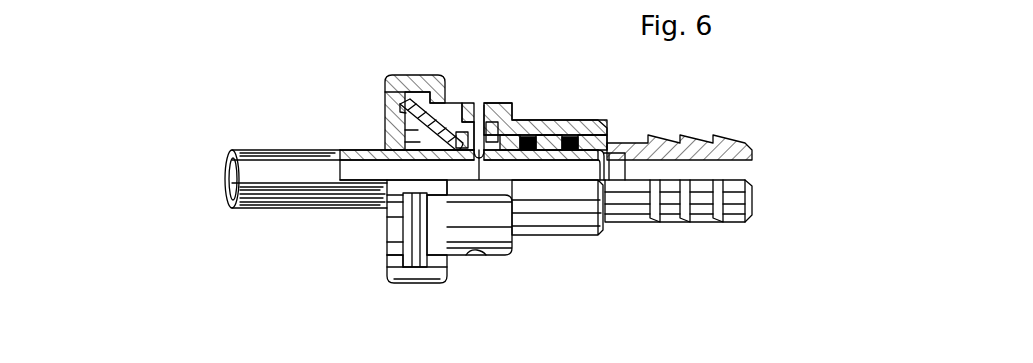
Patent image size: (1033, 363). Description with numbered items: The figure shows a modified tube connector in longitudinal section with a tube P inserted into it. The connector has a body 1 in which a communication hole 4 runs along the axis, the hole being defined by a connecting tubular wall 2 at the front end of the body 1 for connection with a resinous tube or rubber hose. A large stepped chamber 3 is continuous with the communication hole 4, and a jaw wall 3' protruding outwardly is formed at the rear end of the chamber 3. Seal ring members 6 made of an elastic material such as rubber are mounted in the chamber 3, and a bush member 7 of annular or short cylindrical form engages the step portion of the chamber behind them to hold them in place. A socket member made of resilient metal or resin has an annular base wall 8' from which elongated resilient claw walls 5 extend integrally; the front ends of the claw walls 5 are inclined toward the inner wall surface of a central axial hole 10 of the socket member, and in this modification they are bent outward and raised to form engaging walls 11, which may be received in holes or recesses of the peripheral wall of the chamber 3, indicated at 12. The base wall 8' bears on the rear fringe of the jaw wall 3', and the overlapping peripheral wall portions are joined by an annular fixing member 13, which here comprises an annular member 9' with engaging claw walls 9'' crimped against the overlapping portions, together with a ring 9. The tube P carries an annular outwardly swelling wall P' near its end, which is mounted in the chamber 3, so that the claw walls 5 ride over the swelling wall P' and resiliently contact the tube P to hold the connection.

The tube P is at (306, 205).
The annular outwardly swelling wall P' is at (495, 95).
The body 1 is at (573, 225).
The connecting tubular wall 2 is at (662, 213).
The large stepped chamber 3 is at (486, 227).
The jaw wall 3' is at (429, 89).
The communication hole 4 is at (667, 168).
The resilient claw walls 5 is at (420, 122).
The seal ring members 6 is at (551, 141).
The bush member 7 is at (503, 137).
The annular base wall 8' is at (380, 84).
The retaining ring 9 is at (415, 256).
The annular member 9' is at (384, 231).
The engaging claw walls 9'' is at (415, 66).
The hole 10 is at (420, 142).
The engaging walls 11 is at (468, 103).
The slit 12 is at (482, 107).
The fixing member 13 is at (395, 250).